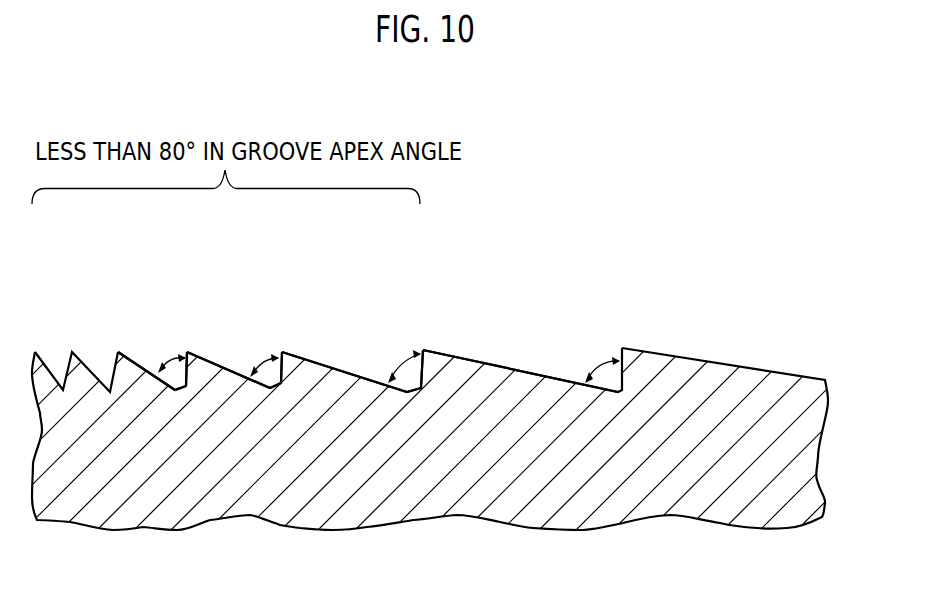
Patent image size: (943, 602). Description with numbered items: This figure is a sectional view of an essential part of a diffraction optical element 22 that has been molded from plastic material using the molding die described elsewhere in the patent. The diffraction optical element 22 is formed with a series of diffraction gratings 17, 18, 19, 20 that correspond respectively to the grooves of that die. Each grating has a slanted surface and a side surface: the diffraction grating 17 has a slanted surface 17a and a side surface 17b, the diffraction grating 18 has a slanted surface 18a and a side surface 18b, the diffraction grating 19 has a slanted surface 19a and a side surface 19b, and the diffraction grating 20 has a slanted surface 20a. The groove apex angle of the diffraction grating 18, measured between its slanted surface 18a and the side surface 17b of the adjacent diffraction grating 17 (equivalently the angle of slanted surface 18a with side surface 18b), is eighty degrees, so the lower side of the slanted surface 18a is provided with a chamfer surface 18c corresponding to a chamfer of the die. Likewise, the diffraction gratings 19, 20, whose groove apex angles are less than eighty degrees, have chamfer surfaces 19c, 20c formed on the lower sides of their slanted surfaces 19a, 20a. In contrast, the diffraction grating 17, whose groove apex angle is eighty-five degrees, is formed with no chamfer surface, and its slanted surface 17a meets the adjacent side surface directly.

The diffraction optical element 22 is at (611, 308).
The diffraction grating 20 is at (145, 353).
The slanted surface 20a is at (130, 353).
The chamfer surface 20c is at (170, 392).
The side surface 19b is at (178, 347).
The diffraction grating 19 is at (233, 353).
The slanted surface 19a is at (217, 358).
The chamfer surface 19c is at (262, 392).
The side surface 18b is at (275, 348).
The diffraction grating 18 is at (355, 353).
The slanted surface 18a is at (323, 357).
The chamfer surface 18c is at (408, 393).
The side surface 17b is at (417, 350).
The diffraction grating 17 is at (527, 352).
The slanted surface 17a is at (480, 357).